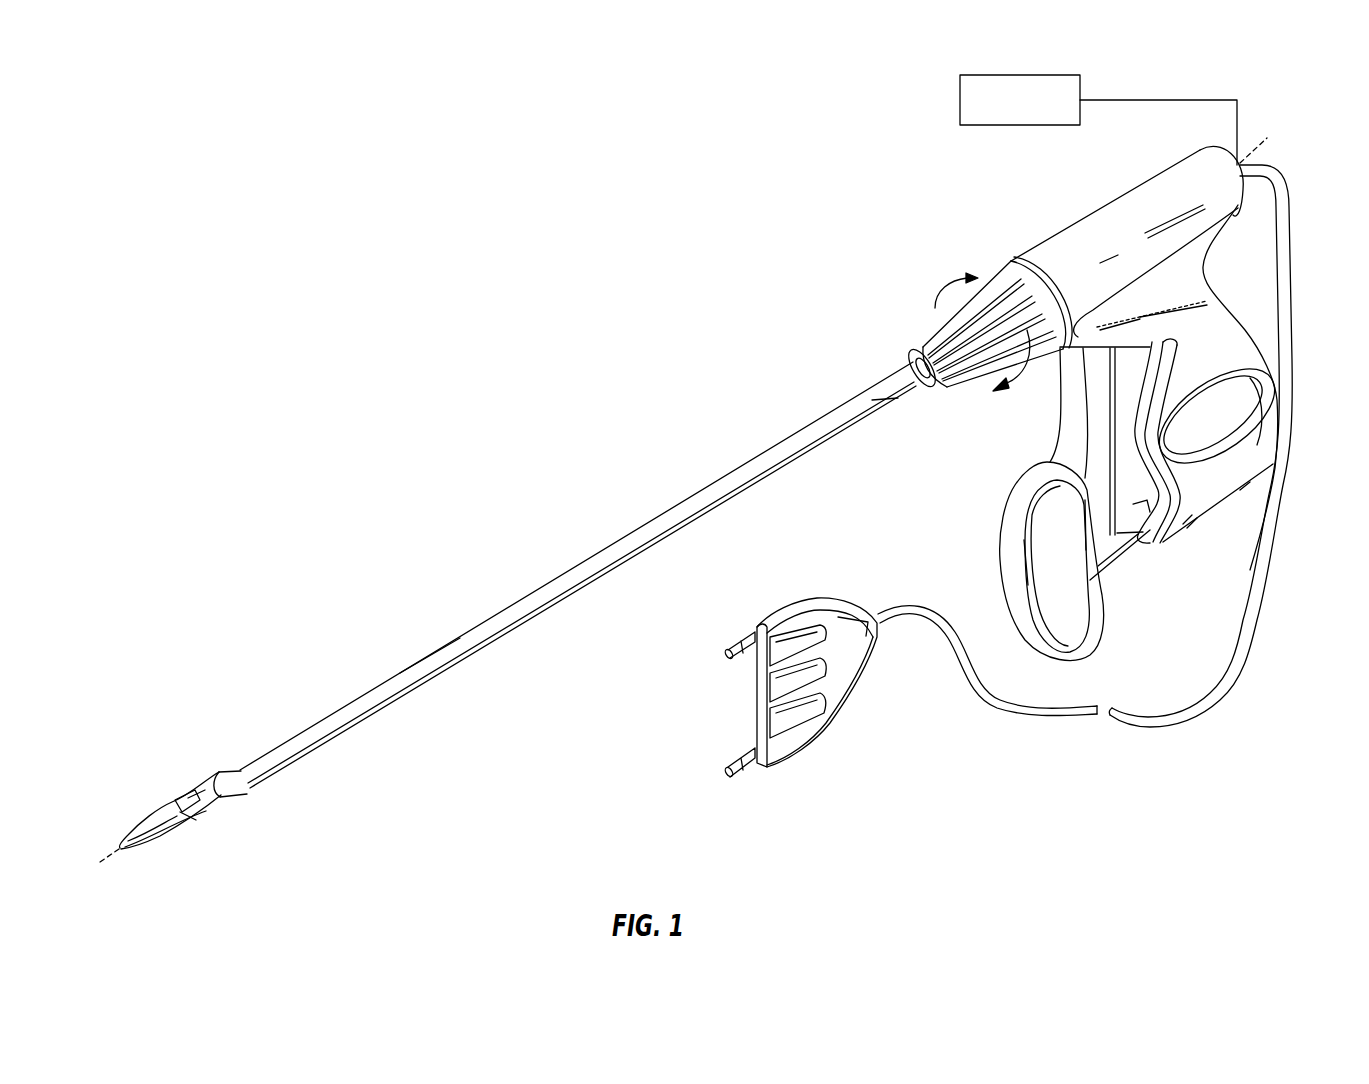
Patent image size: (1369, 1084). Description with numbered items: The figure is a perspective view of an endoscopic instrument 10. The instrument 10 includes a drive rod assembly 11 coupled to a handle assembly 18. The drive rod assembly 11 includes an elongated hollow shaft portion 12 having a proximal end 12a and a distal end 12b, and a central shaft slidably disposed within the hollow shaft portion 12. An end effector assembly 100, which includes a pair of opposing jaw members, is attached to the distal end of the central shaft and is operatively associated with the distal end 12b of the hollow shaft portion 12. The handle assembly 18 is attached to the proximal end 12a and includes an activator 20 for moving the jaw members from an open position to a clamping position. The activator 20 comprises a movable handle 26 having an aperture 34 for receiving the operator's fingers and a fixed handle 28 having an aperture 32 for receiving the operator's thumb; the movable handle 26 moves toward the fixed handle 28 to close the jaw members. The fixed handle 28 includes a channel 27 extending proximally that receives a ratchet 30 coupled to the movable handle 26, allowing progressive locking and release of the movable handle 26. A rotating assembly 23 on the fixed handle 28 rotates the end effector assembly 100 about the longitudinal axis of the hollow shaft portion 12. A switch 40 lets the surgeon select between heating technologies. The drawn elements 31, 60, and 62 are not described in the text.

The endoscopic instrument 10 is at (699, 482).
The drive rod assembly 11 is at (610, 537).
The elongated hollow shaft portion 12 is at (577, 580).
The proximal end 12a is at (870, 407).
The distal end 12b is at (284, 764).
The handle assembly 18 is at (1218, 207).
The activator 20 is at (1042, 510).
The rotating assembly 23 is at (910, 340).
The movable handle 26 is at (1085, 648).
The channel 27 is at (1163, 550).
The fixed handle 28 is at (1215, 401).
The ratchet 30 is at (1122, 560).
The trigger stem of movable handle 31 is at (1092, 396).
The aperture 32 is at (1232, 432).
The aperture 34 is at (1045, 536).
The switch 40 is at (962, 122).
The electrosurgical cable 60 is at (1005, 705).
The connector plug 62 is at (838, 667).
The end effector assembly 100 is at (200, 800).